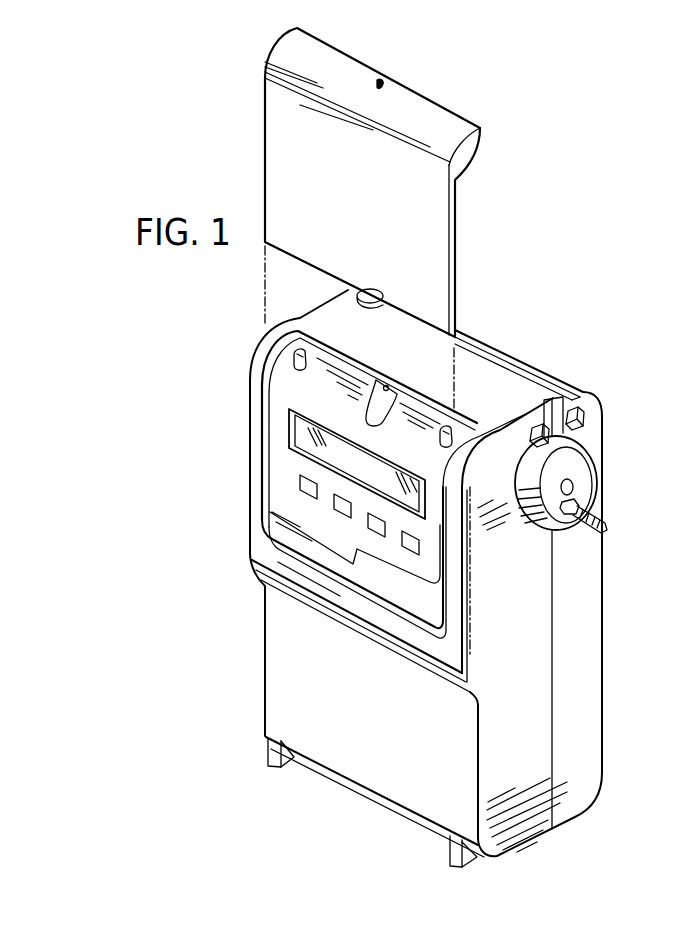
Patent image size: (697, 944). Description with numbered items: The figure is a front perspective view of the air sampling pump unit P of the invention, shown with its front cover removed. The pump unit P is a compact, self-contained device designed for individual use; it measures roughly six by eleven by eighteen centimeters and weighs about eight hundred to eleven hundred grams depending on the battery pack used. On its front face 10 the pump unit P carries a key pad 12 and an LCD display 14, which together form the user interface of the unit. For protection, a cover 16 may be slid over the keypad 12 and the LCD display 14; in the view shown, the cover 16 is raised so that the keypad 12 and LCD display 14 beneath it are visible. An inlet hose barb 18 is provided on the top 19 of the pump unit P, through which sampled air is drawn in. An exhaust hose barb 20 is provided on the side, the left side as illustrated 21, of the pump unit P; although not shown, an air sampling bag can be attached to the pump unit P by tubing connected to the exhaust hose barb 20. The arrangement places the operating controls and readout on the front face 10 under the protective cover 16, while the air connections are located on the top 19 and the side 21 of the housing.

The front face 10 is at (240, 644).
The key pad 12 is at (420, 559).
The LCD display 14 is at (302, 437).
The cover 16 is at (452, 118).
The inlet hose barb 18 is at (385, 305).
The top 19 is at (572, 360).
The exhaust hose barb 20 is at (606, 528).
The left side 21 is at (613, 746).
The air sampling pump unit P is at (548, 173).